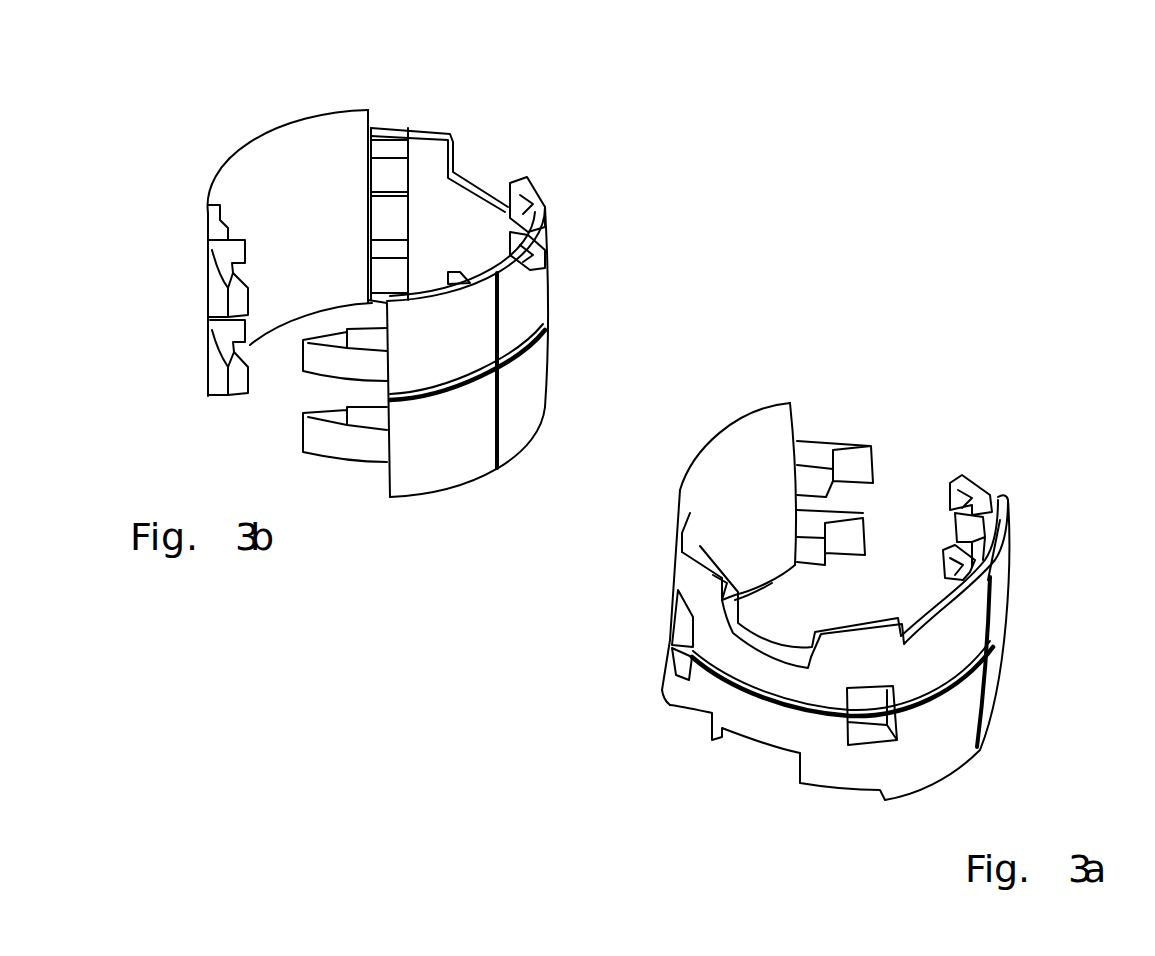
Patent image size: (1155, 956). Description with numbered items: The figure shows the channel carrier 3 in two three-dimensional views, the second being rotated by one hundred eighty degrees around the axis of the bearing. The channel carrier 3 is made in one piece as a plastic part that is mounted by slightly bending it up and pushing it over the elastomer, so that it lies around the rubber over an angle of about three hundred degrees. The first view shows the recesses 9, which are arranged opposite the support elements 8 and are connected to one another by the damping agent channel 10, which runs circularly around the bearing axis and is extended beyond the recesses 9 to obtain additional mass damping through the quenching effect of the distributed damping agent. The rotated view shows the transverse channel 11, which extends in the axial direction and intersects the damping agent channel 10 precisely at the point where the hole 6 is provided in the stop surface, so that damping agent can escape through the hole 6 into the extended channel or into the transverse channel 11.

In FIG. 3B, the channel carrier 3 is at (488, 94).
In FIG. 3A, the channel carrier 3 is at (1010, 360).
In FIG. 3B, the hole 6 is at (270, 242).
In FIG. 3A, the support element 8 is at (853, 442).
In FIG. 3A, the recess 9 is at (817, 500).
In FIG. 3B, the damping agent channel 10 is at (540, 335).
In FIG. 3A, the damping agent channel 10 is at (780, 707).
In FIG. 3B, the transverse channel 11 is at (500, 303).
In FIG. 3A, the transverse channel 11 is at (990, 623).